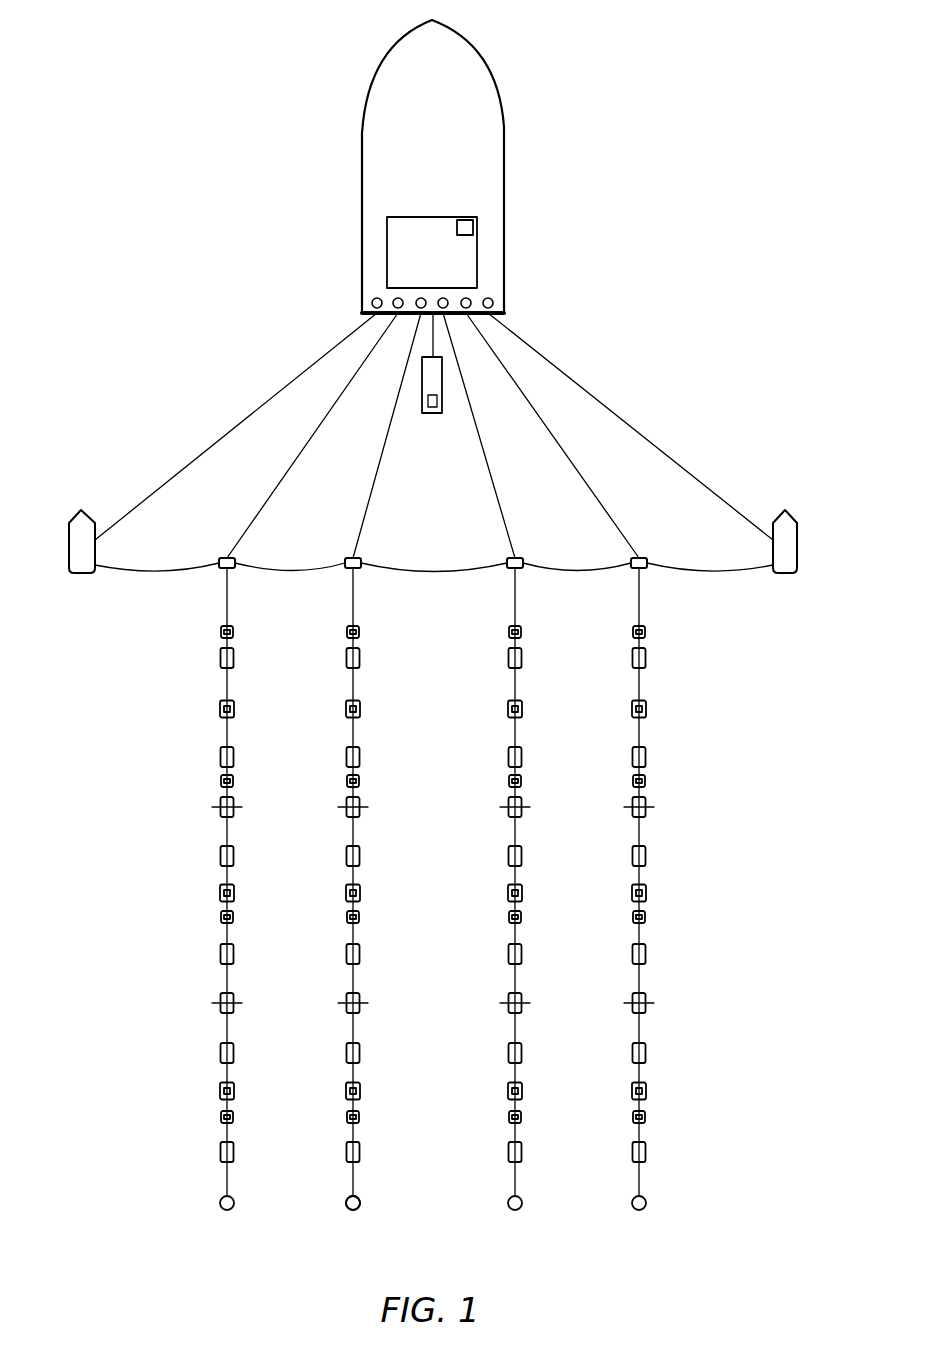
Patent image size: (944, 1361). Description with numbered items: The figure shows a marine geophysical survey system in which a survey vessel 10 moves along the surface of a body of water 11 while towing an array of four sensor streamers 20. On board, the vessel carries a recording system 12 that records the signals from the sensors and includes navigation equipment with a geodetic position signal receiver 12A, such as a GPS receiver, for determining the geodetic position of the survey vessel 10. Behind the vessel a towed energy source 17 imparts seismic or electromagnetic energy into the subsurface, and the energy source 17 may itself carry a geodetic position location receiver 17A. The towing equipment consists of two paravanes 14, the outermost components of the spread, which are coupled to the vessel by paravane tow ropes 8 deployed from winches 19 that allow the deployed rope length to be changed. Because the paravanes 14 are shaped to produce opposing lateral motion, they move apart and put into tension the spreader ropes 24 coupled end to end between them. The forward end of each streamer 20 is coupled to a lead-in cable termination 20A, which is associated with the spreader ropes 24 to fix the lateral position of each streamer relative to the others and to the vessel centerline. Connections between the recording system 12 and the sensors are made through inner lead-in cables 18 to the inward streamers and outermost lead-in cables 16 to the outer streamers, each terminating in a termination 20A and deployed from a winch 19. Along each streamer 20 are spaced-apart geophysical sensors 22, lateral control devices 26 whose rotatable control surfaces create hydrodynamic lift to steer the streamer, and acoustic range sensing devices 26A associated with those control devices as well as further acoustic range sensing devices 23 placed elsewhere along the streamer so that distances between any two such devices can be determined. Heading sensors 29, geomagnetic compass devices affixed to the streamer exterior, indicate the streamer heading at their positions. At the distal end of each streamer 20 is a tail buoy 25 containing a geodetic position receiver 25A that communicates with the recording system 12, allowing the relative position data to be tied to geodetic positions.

The paravane tow rope 8 is at (265, 405).
The survey vessel 10 is at (420, 143).
The body of water 11 is at (574, 49).
The recording system 12 is at (455, 217).
The geodetic position signal receiver 12A is at (473, 228).
The paravane 14 is at (797, 540).
The outermost lead-in cable 16 is at (282, 485).
The energy source 17 is at (425, 416).
The geodetic position location receiver 17A is at (437, 414).
The inner lead-in cable 18 is at (375, 478).
The winch 19 is at (371, 303).
The sensor streamer 20 is at (355, 600).
The lead-in cable termination 20A is at (348, 557).
The geophysical sensor 22 is at (360, 657).
The acoustic range sensing device 23 is at (360, 708).
The spreader rope 24 is at (428, 568).
The tail buoy 25 is at (356, 1211).
The geodetic position receiver 25A is at (361, 1203).
The lateral control device 26 is at (360, 803).
The acoustic range sensing device 26A is at (362, 810).
The heading sensor 29 is at (360, 632).